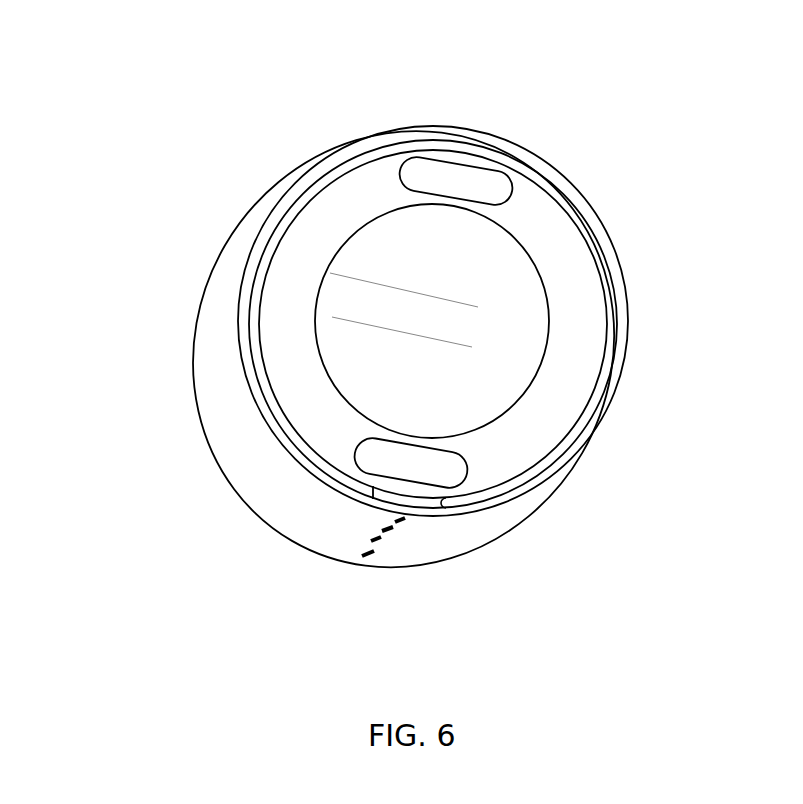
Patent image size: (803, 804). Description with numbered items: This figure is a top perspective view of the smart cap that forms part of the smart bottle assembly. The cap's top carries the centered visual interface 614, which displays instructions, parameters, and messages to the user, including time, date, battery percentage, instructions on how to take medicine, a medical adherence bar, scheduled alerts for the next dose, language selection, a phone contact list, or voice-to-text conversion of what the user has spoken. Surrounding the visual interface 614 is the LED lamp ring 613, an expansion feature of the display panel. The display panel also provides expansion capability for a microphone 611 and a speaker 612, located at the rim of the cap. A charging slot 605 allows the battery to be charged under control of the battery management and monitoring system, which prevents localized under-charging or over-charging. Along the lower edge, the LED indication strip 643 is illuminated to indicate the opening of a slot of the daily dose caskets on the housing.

The charging slot 605 is at (220, 300).
The microphone 611 is at (485, 178).
The speaker 612 is at (427, 463).
The LED lamp ring 613 is at (337, 162).
The visual interface 614 is at (547, 298).
The LED indication strip 643 is at (370, 546).